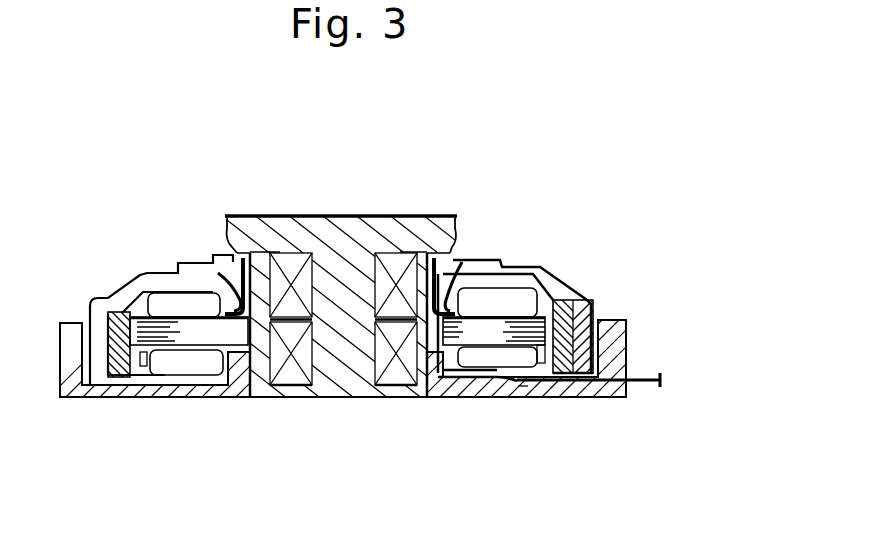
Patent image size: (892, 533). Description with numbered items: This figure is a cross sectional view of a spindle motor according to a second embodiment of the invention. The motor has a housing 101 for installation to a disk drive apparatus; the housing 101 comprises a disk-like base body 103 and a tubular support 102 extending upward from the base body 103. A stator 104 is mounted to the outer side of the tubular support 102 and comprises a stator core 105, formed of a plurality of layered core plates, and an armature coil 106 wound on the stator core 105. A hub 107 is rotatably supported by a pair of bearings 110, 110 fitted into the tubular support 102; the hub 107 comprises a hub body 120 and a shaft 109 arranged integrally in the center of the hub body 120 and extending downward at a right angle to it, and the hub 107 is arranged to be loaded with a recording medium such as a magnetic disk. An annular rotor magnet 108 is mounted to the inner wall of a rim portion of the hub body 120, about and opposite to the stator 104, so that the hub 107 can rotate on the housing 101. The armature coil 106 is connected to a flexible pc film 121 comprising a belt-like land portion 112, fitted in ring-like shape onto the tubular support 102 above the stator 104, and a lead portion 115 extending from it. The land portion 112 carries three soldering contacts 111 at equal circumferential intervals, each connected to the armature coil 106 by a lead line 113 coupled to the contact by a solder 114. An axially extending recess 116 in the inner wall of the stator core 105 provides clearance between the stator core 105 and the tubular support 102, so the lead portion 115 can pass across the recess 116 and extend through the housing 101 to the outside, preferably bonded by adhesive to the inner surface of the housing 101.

The housing 101 is at (243, 397).
The tubular support 102 is at (268, 245).
The base body 103 is at (470, 397).
The stator 104 is at (165, 292).
The stator core 105 is at (168, 340).
The armature coil 106 is at (190, 358).
The hub 107 is at (520, 253).
The rotor magnet 108 is at (587, 300).
The shaft 109 is at (340, 373).
The bearings 110 is at (395, 262).
The soldering contact 111 is at (247, 290).
The land portion 112 is at (453, 235).
The lead line 113 is at (223, 278).
The solder 114 is at (230, 240).
The lead portion 115 is at (585, 386).
The recess 116 is at (557, 290).
The hub body 120 is at (317, 215).
The flexible pc film 121 is at (523, 386).